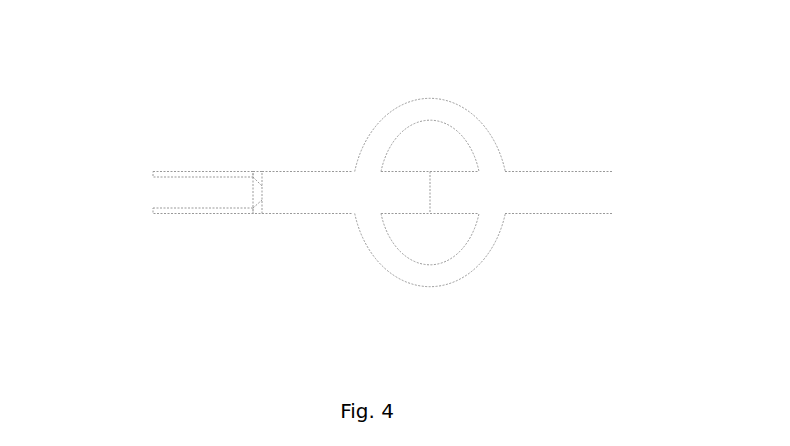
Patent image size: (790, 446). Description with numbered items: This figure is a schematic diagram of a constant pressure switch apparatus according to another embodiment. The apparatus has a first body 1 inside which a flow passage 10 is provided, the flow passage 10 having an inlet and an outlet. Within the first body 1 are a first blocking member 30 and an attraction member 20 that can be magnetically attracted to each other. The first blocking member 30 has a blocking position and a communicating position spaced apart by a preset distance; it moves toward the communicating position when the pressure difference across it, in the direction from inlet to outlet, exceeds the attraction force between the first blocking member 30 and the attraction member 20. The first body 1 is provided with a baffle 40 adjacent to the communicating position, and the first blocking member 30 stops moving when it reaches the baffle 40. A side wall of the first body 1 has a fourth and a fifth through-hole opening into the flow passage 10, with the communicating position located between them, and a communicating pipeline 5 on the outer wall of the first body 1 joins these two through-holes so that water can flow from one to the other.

The first body 1 is at (300, 141).
The communicating pipeline 5 is at (465, 272).
The flow passage 10 is at (572, 186).
The attraction member 20 is at (200, 238).
The first blocking member 30 is at (272, 222).
The baffle 40 is at (460, 180).